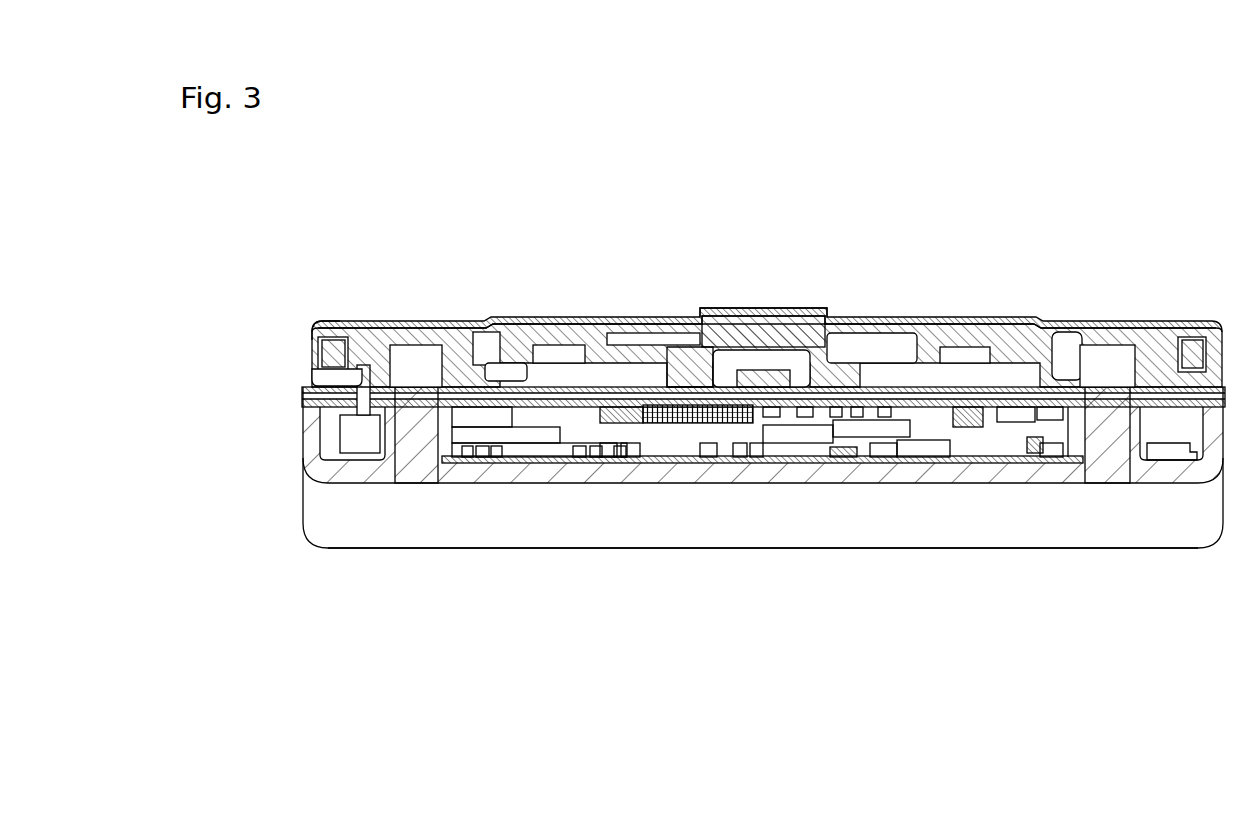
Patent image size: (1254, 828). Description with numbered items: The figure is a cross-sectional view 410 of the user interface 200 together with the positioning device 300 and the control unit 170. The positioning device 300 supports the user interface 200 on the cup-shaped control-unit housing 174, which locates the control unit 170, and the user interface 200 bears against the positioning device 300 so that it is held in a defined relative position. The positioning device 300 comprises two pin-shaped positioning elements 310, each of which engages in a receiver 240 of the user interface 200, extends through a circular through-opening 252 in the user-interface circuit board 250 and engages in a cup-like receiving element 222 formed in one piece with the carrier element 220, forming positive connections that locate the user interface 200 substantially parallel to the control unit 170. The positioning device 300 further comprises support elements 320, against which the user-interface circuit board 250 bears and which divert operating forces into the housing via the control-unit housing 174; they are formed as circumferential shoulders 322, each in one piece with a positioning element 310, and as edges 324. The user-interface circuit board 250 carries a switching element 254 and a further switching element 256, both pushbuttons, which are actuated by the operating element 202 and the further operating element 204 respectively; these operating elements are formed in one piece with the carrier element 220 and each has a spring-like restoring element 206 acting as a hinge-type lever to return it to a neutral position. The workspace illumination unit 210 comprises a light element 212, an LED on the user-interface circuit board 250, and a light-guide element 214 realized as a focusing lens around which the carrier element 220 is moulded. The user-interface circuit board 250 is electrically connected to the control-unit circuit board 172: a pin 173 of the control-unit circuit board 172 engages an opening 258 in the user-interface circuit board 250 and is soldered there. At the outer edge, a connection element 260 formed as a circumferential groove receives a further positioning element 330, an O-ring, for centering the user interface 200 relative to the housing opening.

The control unit 170 is at (968, 570).
The control-unit circuit board 172 is at (796, 463).
The pin 173 is at (307, 382).
The control-unit housing 174 is at (932, 525).
The user interface 200 is at (720, 295).
The operating element 202 is at (573, 318).
The further operating element 204 is at (966, 317).
The restoring element 206 is at (623, 320).
The workspace illumination unit 210 is at (764, 290).
The light element 212 is at (740, 317).
The light-guide element 214 is at (805, 317).
The carrier element 220 is at (683, 317).
The receiving element 222 is at (424, 322).
The receiver 240 is at (429, 322).
The user-interface circuit board 250 is at (303, 395).
The through-opening 252 is at (380, 322).
The switching element 254 is at (523, 445).
The further switching element 256 is at (1008, 422).
The opening 258 is at (373, 453).
The connection element 260 is at (333, 322).
The positioning device 300 is at (701, 507).
The positioning element 310 is at (459, 318).
The support element 320 is at (701, 483).
The circumferential shoulder 322 is at (432, 440).
The edge 324 is at (305, 413).
The further positioning element 330 is at (307, 343).
The cross-sectional view 410 is at (720, 255).